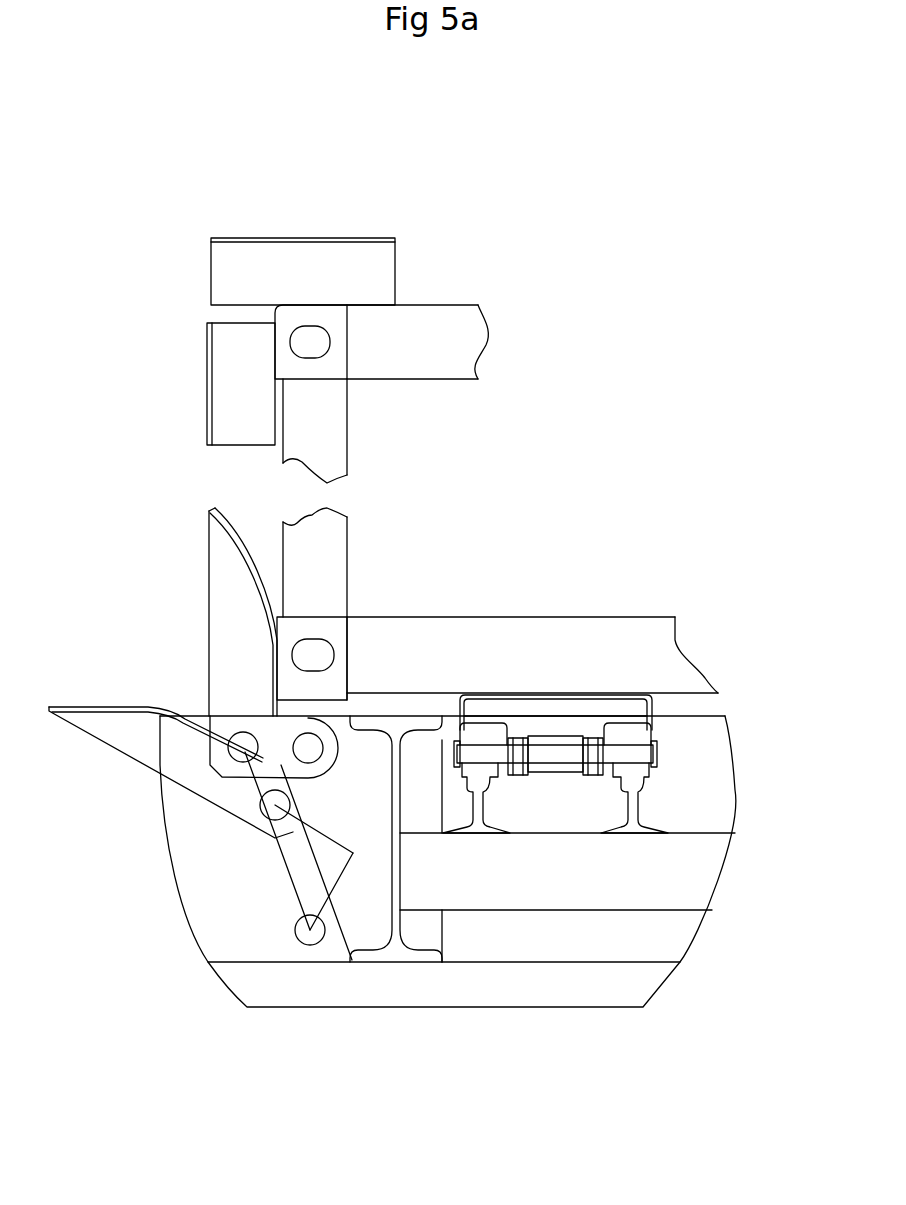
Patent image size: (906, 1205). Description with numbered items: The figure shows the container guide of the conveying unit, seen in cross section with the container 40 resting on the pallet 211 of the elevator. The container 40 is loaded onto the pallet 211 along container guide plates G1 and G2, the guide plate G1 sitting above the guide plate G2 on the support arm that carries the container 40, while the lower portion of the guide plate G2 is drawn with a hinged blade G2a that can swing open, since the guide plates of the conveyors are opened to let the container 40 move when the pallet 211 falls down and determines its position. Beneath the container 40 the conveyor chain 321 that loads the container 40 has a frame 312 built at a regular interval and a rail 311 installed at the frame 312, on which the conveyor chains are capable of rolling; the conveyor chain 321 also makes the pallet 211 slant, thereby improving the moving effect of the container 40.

The container guide plate G1 is at (295, 262).
The container guide plate G2 is at (243, 357).
The guide blade of second guide G2a is at (115, 722).
The container 40 is at (333, 435).
The pallet 211 is at (739, 726).
The rail 311 is at (645, 832).
The frame 312 is at (683, 880).
The conveyor chain 321 is at (585, 708).